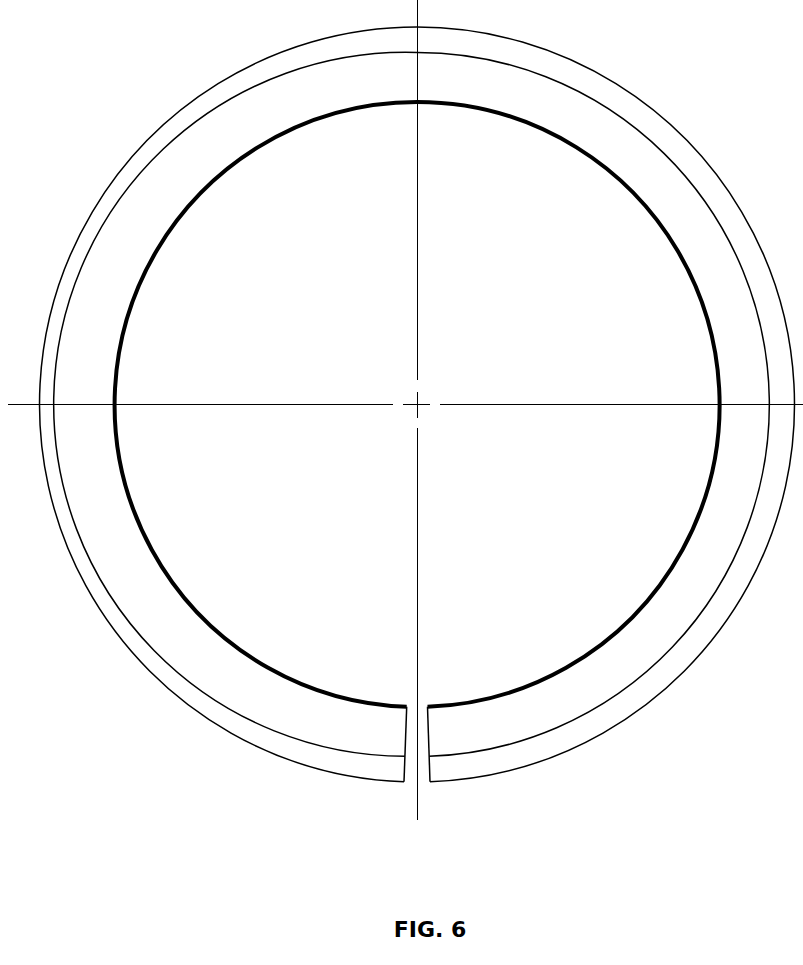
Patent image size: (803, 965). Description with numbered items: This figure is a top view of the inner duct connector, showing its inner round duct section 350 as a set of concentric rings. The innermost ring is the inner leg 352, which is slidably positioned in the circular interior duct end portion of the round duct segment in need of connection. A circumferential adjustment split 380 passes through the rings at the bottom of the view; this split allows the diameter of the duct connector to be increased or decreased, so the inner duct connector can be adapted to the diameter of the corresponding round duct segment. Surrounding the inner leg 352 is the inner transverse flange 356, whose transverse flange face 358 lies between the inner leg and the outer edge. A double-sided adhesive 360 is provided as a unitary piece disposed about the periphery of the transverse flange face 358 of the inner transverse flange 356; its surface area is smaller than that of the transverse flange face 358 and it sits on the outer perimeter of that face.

The inner round duct section 350 is at (412, 401).
The inner leg 352 is at (417, 404).
The inner transverse flange 356 is at (608, 405).
The transverse flange face 358 is at (236, 404).
The double-sided adhesive 360 is at (416, 404).
The circumferential adjustment split 380 is at (450, 703).